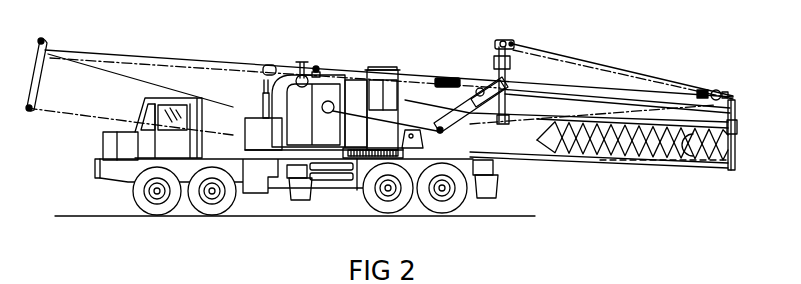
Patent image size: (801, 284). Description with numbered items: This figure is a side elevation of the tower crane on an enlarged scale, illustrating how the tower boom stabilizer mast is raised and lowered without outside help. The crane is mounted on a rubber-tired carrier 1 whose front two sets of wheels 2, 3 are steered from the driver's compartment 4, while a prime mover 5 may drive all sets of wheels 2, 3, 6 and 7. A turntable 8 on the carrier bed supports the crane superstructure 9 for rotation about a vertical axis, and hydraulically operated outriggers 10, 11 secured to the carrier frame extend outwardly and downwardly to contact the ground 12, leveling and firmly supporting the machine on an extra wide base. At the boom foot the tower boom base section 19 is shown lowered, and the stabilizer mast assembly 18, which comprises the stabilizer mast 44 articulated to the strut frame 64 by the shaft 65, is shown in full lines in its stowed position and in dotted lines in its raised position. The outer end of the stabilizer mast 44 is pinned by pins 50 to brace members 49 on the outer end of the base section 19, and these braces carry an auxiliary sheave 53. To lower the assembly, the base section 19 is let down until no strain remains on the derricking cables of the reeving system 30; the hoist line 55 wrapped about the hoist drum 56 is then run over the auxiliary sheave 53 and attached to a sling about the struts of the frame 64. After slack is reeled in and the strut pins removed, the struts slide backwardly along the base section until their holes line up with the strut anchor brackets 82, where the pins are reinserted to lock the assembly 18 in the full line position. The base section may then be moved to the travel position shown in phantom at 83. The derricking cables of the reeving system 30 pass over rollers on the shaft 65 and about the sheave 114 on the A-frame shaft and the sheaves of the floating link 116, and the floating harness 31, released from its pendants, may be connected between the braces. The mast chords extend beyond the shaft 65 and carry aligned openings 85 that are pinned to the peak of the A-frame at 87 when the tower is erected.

The carrier 1 is at (85, 169).
The wheels 2 is at (157, 214).
The wheels 3 is at (212, 214).
The driver's compartment 4 is at (206, 104).
The prime mover 5 is at (108, 141).
The wheels 6 is at (380, 204).
The wheels 7 is at (455, 205).
The turntable 8 is at (370, 189).
The crane superstructure 9 is at (362, 69).
The outrigger 10 is at (297, 201).
The outrigger 11 is at (500, 190).
The ground 12 is at (70, 216).
The stabilizer mast assembly 18 is at (618, 60).
The base section 19 is at (638, 161).
The reeving system 30 is at (431, 69).
The floating harness 31 is at (733, 85).
The stabilizer mast 44 is at (655, 96).
The brace members 49 is at (737, 151).
The pins 50 is at (737, 101).
The sheave 53 is at (739, 128).
The hoist line 55 is at (704, 165).
The hoist drum 56 is at (323, 112).
The frame 64 is at (463, 83).
The shaft 65 is at (512, 76).
The strut anchor brackets 82 is at (440, 134).
The travel position 83 is at (38, 111).
The aligned openings 85 is at (501, 40).
The A-frame peak pin connection 87 is at (318, 66).
The sheave 114 is at (300, 62).
The floating link 116 is at (448, 77).